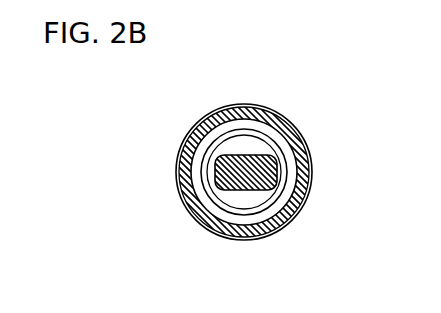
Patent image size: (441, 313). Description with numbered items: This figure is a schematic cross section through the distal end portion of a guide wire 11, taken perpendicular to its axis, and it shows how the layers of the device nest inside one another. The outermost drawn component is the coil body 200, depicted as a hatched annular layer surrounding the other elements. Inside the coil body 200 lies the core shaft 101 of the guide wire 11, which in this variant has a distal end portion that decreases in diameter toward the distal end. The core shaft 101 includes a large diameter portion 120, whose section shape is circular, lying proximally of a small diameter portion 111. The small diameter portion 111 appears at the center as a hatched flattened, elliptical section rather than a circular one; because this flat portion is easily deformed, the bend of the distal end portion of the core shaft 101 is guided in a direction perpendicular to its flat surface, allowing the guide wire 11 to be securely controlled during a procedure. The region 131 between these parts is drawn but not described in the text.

The guide wire 11 is at (263, 78).
The core shaft 101 is at (285, 117).
The small diameter portion 111 is at (227, 189).
The large diameter portion 120 is at (288, 187).
The interior space 131 is at (263, 195).
The coil body 200 is at (305, 146).